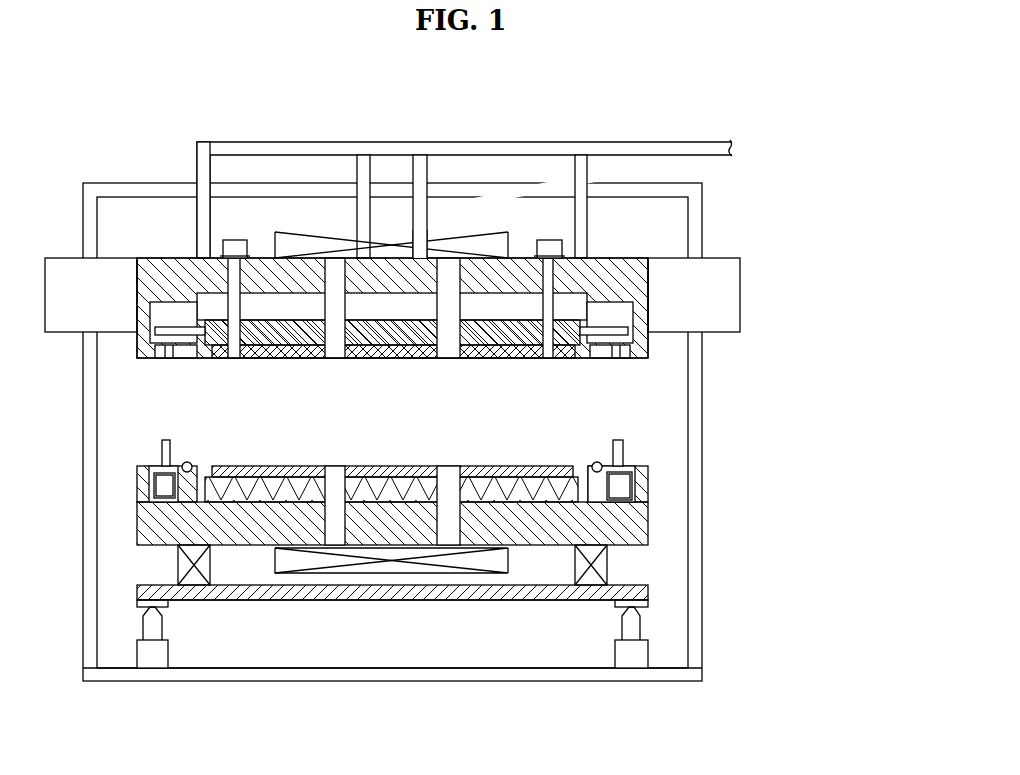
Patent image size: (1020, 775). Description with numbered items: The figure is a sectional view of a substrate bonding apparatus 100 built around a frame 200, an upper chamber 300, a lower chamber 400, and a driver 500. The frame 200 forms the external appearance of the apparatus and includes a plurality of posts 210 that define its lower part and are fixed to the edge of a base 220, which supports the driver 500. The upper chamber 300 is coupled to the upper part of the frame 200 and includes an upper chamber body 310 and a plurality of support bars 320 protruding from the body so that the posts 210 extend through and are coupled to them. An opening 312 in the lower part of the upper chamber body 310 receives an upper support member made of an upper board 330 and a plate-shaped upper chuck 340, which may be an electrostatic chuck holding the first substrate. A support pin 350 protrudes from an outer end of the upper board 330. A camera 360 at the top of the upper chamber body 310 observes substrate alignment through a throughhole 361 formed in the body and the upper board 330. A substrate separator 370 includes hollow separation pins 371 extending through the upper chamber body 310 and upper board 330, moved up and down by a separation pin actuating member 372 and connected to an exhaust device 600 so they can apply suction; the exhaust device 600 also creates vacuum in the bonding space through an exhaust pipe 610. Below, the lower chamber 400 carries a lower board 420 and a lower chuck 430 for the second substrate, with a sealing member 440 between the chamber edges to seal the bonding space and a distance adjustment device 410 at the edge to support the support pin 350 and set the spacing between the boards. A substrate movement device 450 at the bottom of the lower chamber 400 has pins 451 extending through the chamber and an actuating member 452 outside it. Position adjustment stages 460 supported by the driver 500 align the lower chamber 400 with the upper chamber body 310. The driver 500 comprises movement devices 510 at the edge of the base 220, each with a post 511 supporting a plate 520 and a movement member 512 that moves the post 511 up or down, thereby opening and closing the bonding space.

The substrate bonding apparatus 100 is at (690, 116).
The frame 200 is at (708, 190).
The posts 210 is at (702, 228).
The base 220 is at (585, 683).
The upper chamber 300 is at (828, 262).
The upper chamber body 310 is at (650, 302).
The opening 312 is at (201, 358).
The support bars 320 is at (740, 268).
The upper board 330 is at (482, 358).
The upper chuck 340 is at (520, 358).
The support pin 350 is at (598, 358).
The camera 360 is at (233, 240).
The throughhole 361 is at (197, 258).
The substrate separator 370 is at (319, 403).
The separation pins 371 is at (325, 360).
The separation pin actuating member 372 is at (276, 262).
The lower chamber 400 is at (650, 490).
The distance adjustment device 410 is at (150, 446).
The lower board 420 is at (407, 477).
The lower chuck 430 is at (362, 466).
The sealing member 440 is at (186, 461).
The substrate movement device 450 is at (384, 636).
The pins 451 is at (327, 568).
The actuating member 452 is at (368, 575).
The position adjustment stages 460 is at (195, 580).
The driver 500 is at (658, 595).
The movement devices 510 is at (768, 612).
The post 511 is at (641, 622).
The movement member 512 is at (650, 650).
The plate 520 is at (476, 600).
The exhaust device 600 is at (482, 141).
The exhaust pipe 610 is at (368, 170).